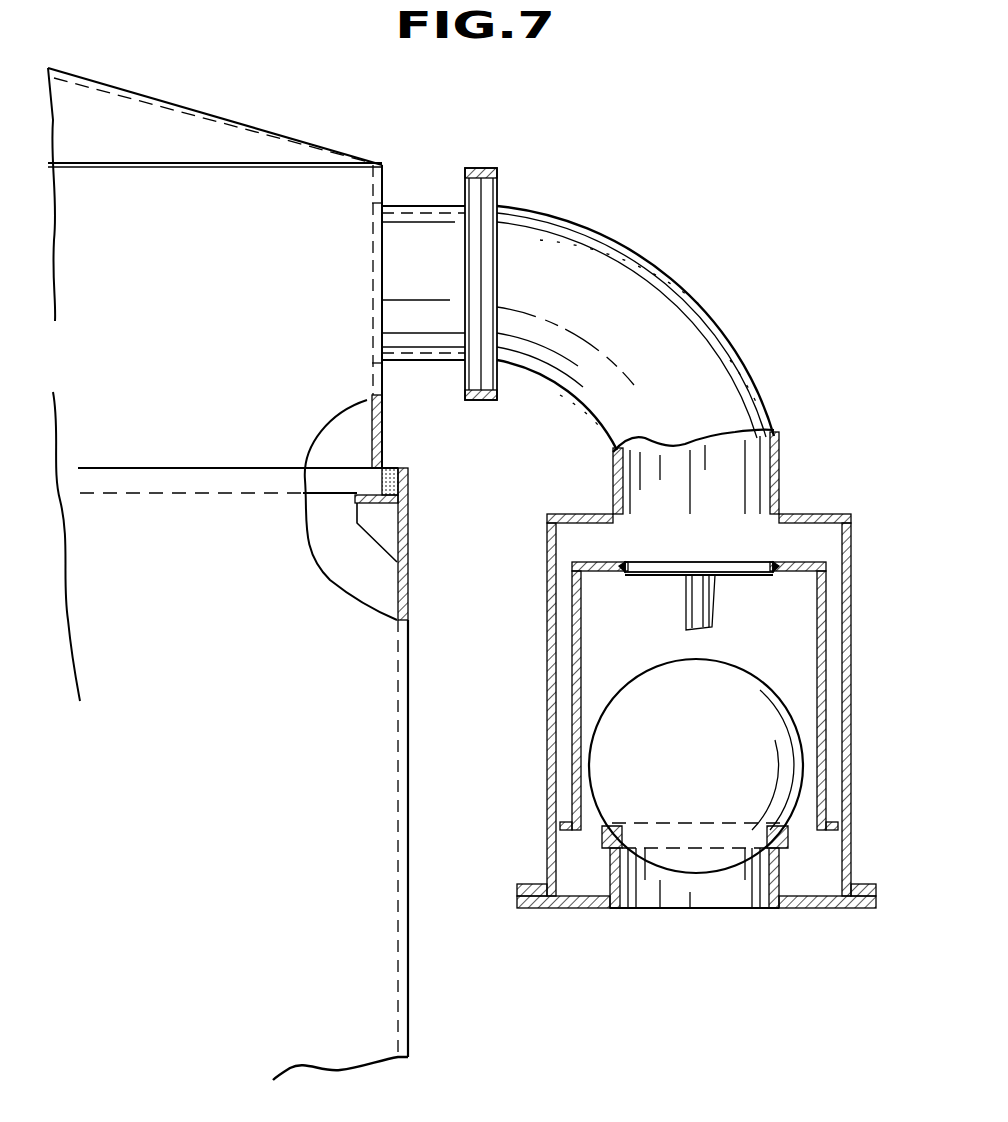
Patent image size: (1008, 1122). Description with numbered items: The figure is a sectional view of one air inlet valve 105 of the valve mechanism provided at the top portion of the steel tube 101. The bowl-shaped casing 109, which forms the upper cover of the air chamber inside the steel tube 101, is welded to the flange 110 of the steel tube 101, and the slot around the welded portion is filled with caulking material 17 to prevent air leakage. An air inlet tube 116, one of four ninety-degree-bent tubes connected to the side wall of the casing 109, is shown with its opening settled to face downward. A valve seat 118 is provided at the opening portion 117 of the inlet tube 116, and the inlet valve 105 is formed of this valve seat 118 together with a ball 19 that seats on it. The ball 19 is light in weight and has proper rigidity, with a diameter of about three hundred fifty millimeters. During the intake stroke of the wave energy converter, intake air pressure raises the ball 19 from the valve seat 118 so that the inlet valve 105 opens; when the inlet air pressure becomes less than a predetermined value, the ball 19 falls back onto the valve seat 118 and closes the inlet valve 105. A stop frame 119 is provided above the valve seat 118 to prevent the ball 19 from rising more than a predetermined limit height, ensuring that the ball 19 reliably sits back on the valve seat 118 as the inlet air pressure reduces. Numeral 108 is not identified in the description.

The caulking material 17 is at (400, 468).
The ball 19 is at (632, 697).
The steel tube 101 is at (404, 1003).
The air inlet valve 105 is at (863, 688).
The building 108 is at (112, 74).
The casing 109 is at (225, 120).
The flange 110 is at (363, 492).
The air inlet tube 116 is at (688, 313).
The opening portion 117 is at (690, 908).
The valve seat 118 is at (603, 837).
The stop frame 119 is at (797, 562).